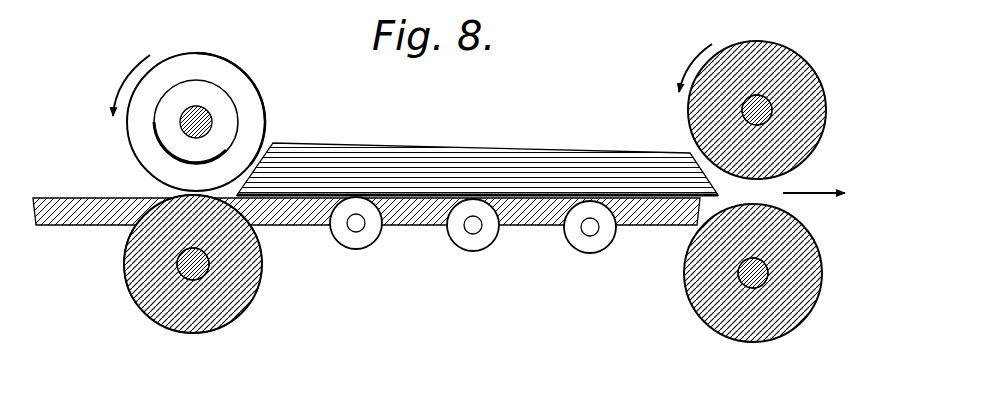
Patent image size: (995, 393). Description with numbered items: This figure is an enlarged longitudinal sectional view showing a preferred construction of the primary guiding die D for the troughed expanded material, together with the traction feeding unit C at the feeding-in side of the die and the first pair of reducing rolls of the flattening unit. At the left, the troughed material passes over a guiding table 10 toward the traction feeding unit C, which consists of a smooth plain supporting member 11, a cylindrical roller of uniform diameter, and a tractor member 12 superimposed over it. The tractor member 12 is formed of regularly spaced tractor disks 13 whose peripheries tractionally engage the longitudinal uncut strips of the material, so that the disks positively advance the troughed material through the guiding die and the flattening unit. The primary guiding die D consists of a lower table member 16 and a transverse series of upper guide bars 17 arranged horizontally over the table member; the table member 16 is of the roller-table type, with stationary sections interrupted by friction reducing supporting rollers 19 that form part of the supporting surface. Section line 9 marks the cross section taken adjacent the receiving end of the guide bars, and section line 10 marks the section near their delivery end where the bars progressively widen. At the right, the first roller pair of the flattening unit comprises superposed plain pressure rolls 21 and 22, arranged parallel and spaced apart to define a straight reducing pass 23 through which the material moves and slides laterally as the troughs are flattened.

The section line 9- 9 is at (303, 290).
The guiding table 10 is at (660, 292).
The supporting member 11 is at (125, 266).
The tractor member 12 is at (149, 70).
The tractor disks 13 is at (231, 67).
The lower table member 16 is at (522, 228).
The upper guide bars 17 is at (461, 146).
The friction reducing supporting rollers 19 is at (462, 244).
The upper pressure roll 21 is at (826, 129).
The lower pressure roll 22 is at (812, 254).
The straight reducing pass 23 is at (792, 190).
The traction feeding unit C is at (826, 50).
The primary guiding die D is at (545, 115).